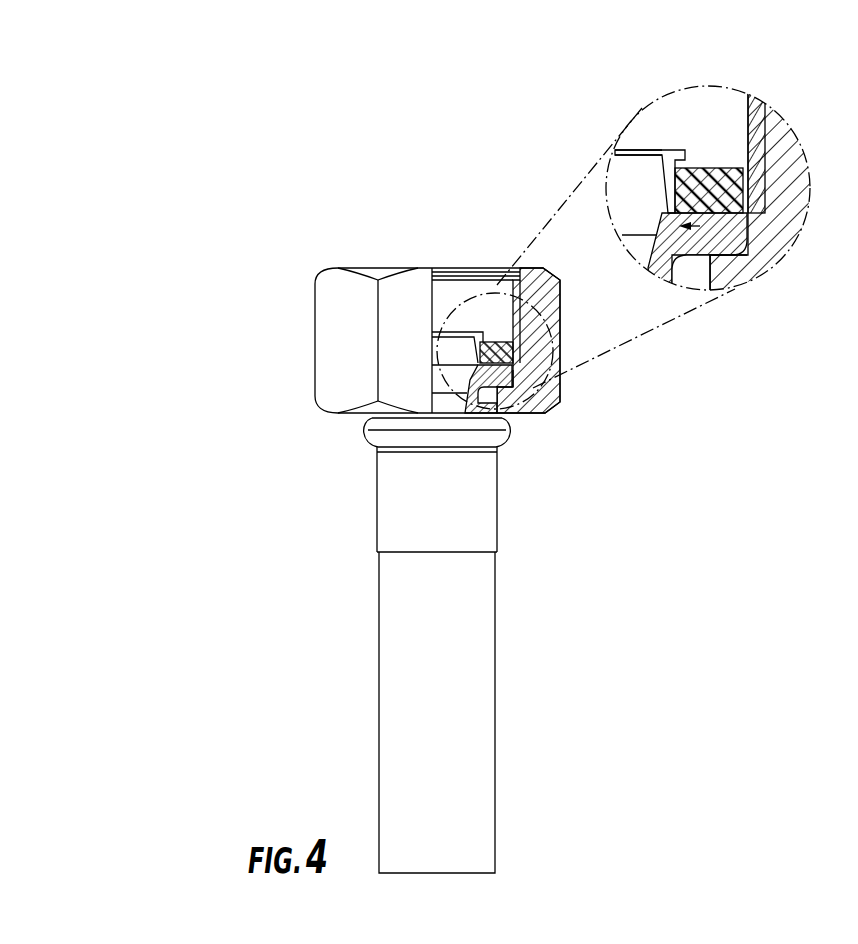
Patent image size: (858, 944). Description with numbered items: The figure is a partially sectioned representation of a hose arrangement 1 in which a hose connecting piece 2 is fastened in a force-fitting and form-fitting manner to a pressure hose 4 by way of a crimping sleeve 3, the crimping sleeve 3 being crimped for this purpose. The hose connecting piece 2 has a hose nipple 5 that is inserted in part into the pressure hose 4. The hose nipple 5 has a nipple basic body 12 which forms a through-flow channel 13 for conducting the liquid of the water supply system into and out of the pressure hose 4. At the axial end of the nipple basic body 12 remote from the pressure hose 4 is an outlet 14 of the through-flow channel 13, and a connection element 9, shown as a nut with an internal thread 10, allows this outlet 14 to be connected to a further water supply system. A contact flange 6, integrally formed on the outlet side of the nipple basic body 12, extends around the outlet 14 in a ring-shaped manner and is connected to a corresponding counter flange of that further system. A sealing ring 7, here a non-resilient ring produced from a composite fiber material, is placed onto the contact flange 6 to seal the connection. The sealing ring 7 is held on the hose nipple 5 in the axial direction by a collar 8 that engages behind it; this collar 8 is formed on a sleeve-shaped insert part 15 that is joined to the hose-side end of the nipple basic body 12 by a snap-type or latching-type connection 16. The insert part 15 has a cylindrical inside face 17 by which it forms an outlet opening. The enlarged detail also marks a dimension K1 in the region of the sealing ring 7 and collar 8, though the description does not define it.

The hose arrangement 1 is at (225, 560).
The hose connecting piece 2 is at (309, 448).
The crimping sleeve 3 is at (472, 527).
The pressure hose 4 is at (450, 705).
The hose nipple 5 is at (510, 403).
The contact flange 6 is at (749, 295).
The sealing ring 7 is at (712, 180).
The collar 8 is at (683, 132).
The connection element 9 is at (540, 315).
The internal thread 10 is at (492, 282).
The nipple basic body 12 is at (667, 280).
The through-flow channel 13 is at (441, 375).
The outlet 14 is at (731, 242).
The sleeve-shaped insert part 15 is at (624, 123).
The snap-type or latching-type connection 16 is at (745, 188).
The cylindrical inside face 17 is at (629, 173).
The gap K1 is at (542, 381).